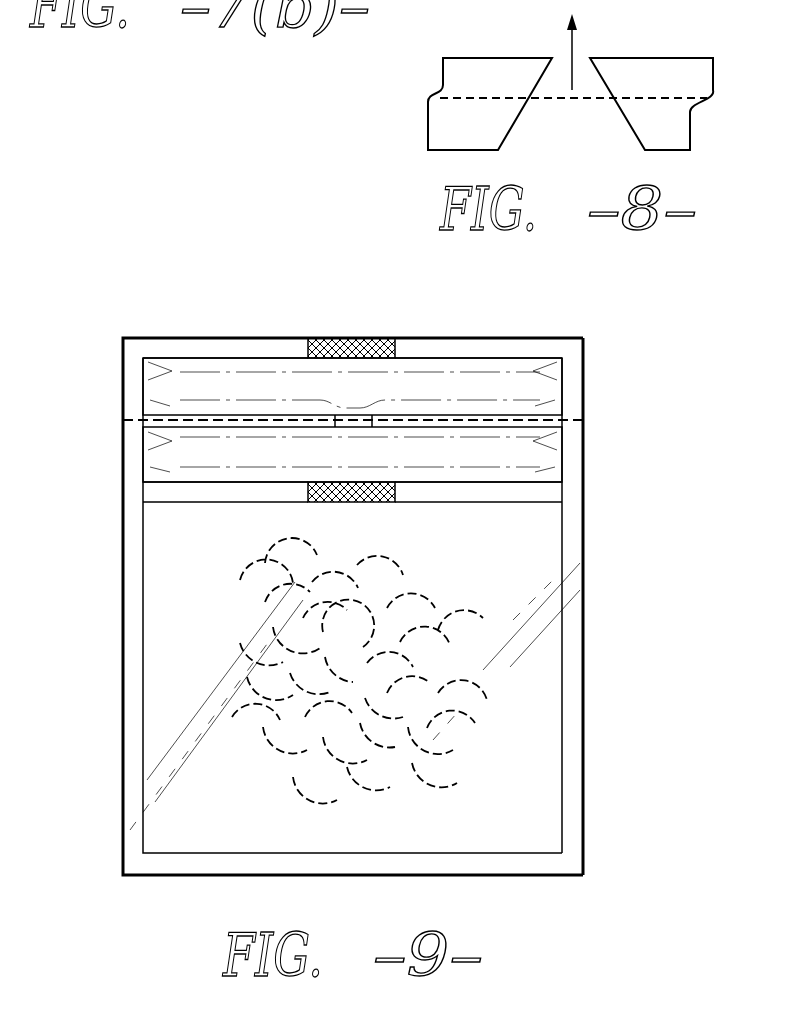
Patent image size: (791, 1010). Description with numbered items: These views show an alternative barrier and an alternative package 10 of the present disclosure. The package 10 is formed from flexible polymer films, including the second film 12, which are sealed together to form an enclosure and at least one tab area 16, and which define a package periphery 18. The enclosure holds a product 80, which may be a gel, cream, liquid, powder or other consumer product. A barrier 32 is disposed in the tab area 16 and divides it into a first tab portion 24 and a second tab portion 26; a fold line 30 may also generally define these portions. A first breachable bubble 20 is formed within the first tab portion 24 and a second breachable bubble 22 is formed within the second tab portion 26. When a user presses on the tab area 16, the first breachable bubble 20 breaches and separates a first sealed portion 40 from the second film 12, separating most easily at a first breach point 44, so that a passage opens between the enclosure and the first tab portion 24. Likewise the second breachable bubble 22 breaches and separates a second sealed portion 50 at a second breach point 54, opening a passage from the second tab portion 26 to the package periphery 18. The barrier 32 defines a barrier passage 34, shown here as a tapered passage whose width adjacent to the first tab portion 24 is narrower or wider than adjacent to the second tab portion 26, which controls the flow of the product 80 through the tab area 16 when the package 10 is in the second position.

In FIG. 9, the package 10 is at (130, 260).
In FIG. 9, the second film 12 is at (157, 662).
In FIG. 9, the tab area 16 is at (613, 417).
In FIG. 9, the package periphery 18 is at (572, 718).
In FIG. 9, the first breachable bubble 20 is at (487, 453).
In FIG. 9, the second breachable bubble 22 is at (475, 386).
In FIG. 9, the first tab portion 24 is at (586, 453).
In FIG. 9, the second tab portion 26 is at (586, 388).
In FIG. 8, the fold line 30 is at (672, 97).
In FIG. 9, the fold line 30 is at (200, 422).
In FIG. 8, the barrier 32 is at (490, 58).
In FIG. 9, the barrier 32 is at (175, 415).
In FIG. 8, the barrier passage 34 is at (578, 70).
In FIG. 9, the barrier passage 34 is at (355, 412).
In FIG. 9, the first sealed portion 40 is at (168, 493).
In FIG. 9, the first breach point 44 is at (375, 505).
In FIG. 9, the second sealed portion 50 is at (167, 347).
In FIG. 9, the second breach point 54 is at (367, 345).
In FIG. 9, the product 80 is at (269, 744).